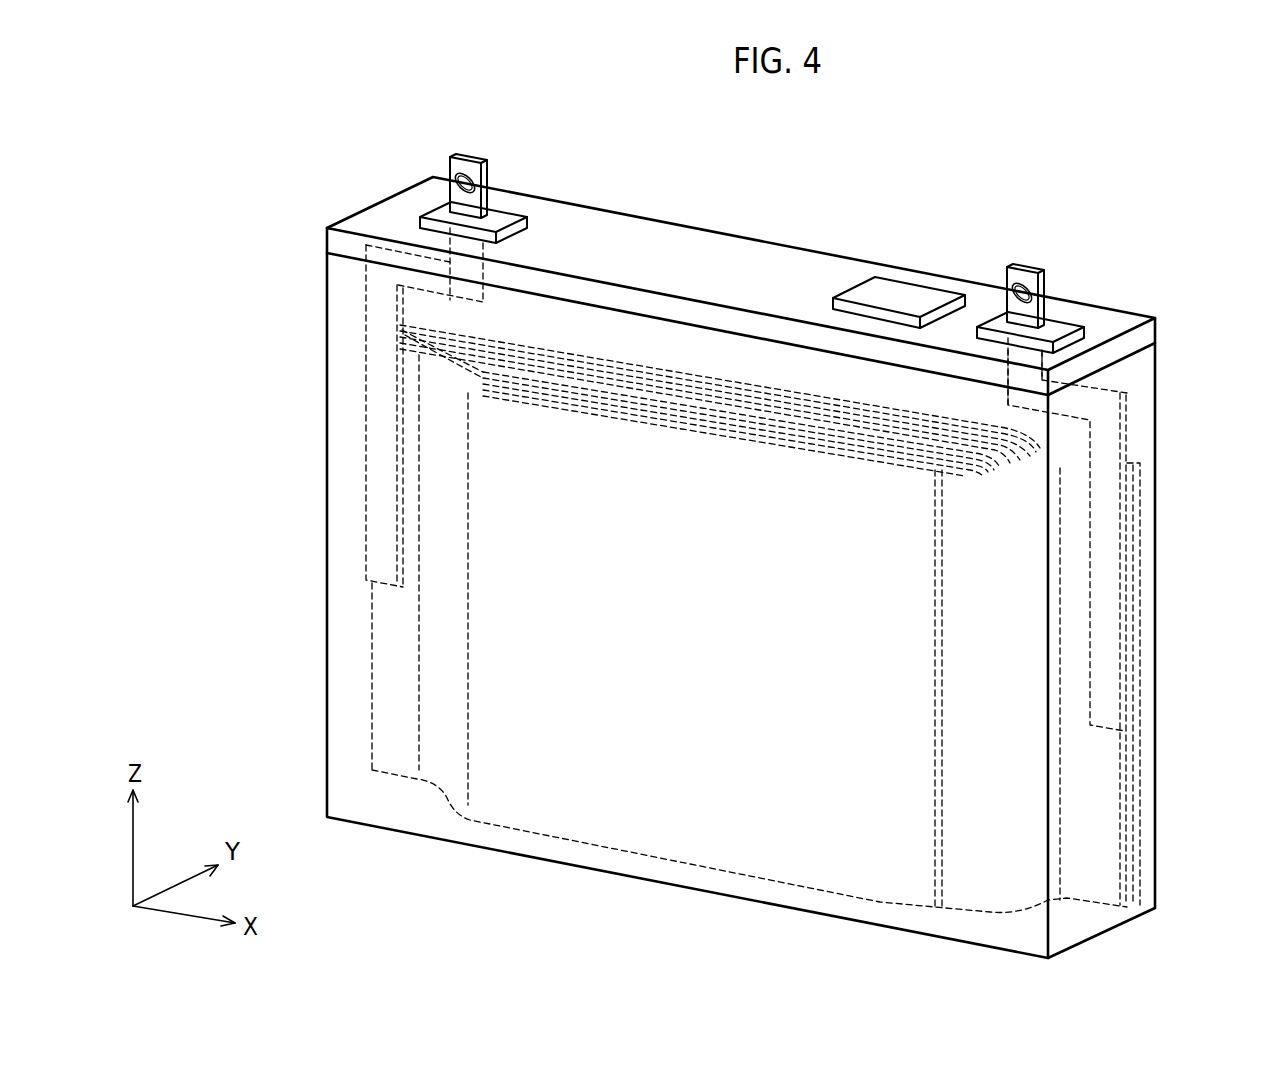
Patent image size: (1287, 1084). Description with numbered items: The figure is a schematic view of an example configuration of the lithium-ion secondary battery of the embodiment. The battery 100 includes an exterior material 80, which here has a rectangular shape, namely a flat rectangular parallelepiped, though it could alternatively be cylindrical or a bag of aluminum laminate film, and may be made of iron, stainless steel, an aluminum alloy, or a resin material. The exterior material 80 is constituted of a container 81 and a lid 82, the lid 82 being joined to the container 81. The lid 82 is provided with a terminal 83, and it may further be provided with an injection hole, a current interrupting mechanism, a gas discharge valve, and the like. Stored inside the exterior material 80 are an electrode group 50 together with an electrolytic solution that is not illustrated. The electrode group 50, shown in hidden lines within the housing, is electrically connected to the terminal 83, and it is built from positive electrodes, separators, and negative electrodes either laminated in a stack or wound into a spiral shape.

The battery 100 is at (925, 168).
The exterior material 80 is at (1236, 323).
The container 81 is at (1156, 388).
The lid 82 is at (1156, 330).
The terminal 83 is at (478, 158).
The electrode group 50 is at (487, 575).